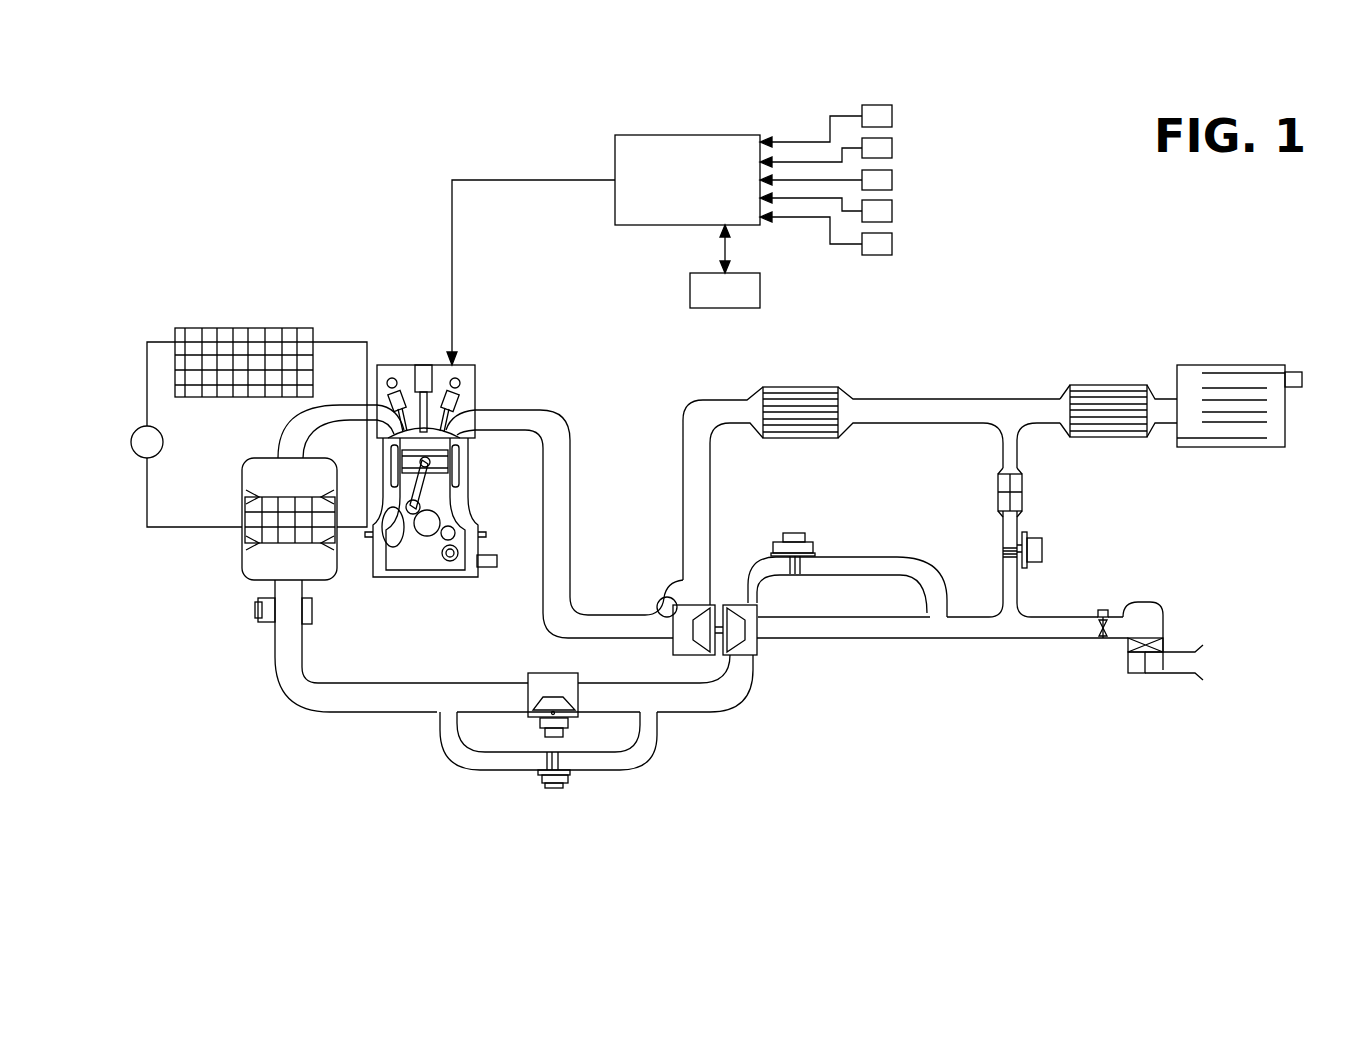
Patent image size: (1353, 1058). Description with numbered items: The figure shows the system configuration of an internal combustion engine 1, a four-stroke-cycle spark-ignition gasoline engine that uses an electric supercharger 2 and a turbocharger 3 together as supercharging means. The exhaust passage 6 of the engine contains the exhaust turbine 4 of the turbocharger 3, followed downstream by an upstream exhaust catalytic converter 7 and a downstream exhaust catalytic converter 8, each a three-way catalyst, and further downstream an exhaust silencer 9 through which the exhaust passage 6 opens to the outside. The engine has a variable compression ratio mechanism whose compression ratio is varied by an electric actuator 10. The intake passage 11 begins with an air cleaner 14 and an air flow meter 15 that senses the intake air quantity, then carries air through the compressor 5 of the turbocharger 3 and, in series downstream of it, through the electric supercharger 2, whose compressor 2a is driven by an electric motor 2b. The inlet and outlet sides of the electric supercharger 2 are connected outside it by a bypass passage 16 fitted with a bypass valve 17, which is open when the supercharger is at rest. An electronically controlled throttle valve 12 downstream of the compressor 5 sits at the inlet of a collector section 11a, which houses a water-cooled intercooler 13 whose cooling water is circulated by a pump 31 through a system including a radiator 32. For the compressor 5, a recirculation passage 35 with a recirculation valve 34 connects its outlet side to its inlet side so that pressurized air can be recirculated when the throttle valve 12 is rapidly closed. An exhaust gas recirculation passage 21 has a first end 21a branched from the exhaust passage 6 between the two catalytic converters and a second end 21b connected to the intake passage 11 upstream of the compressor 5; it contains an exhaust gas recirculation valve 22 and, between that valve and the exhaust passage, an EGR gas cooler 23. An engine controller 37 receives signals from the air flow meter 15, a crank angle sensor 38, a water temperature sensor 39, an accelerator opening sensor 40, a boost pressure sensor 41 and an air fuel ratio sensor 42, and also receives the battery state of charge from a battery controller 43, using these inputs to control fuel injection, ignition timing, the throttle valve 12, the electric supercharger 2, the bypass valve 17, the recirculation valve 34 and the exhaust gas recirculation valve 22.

The internal combustion engine 1 is at (478, 355).
The electric supercharger 2 is at (503, 668).
The compressor 2a is at (552, 697).
The electric motor 2b is at (570, 730).
The turbocharger 3 is at (780, 662).
The exhaust turbine 4 is at (700, 612).
The compressor 5 is at (740, 658).
The exhaust passage 6 is at (558, 488).
The upstream exhaust catalytic converter 7 is at (798, 384).
The downstream exhaust catalytic converter 8 is at (1105, 383).
The exhaust silencer 9 is at (1225, 363).
The electric actuator 10 is at (483, 560).
The intake passage 11 is at (310, 692).
The collector section 11a is at (240, 556).
The throttle valve 12 is at (282, 612).
The intercooler 13 is at (243, 532).
The air cleaner 14 is at (1147, 655).
The air flow meter 15 is at (1102, 632).
The bypass passage 16 is at (470, 755).
The bypass valve 17 is at (540, 782).
The exhaust gas recirculation passage 21 is at (1018, 447).
The first end 21a is at (1007, 423).
The second end 21b is at (1013, 617).
The exhaust gas recirculation valve 22 is at (1043, 550).
The EGR gas cooler 23 is at (1025, 484).
The pump 31 is at (160, 452).
The radiator 32 is at (238, 327).
The recirculation valve 34 is at (812, 542).
The recirculation passage 35 is at (853, 563).
The engine controller 37 is at (688, 142).
The crank angle sensor 38 is at (892, 116).
The water temperature sensor 39 is at (892, 148).
The accelerator opening sensor 40 is at (892, 180).
The boost pressure sensor 41 is at (892, 211).
The air fuel ratio sensor 42 is at (892, 244).
The battery controller 43 is at (695, 290).